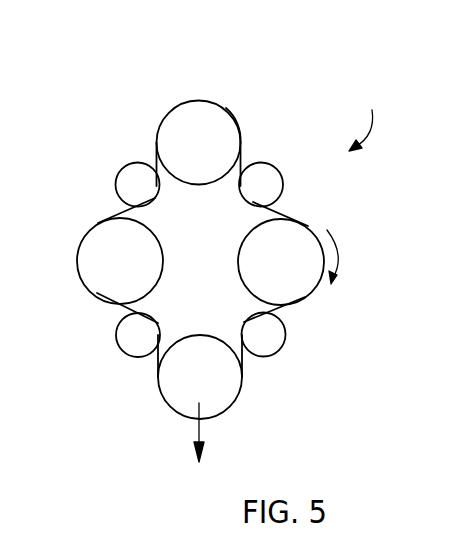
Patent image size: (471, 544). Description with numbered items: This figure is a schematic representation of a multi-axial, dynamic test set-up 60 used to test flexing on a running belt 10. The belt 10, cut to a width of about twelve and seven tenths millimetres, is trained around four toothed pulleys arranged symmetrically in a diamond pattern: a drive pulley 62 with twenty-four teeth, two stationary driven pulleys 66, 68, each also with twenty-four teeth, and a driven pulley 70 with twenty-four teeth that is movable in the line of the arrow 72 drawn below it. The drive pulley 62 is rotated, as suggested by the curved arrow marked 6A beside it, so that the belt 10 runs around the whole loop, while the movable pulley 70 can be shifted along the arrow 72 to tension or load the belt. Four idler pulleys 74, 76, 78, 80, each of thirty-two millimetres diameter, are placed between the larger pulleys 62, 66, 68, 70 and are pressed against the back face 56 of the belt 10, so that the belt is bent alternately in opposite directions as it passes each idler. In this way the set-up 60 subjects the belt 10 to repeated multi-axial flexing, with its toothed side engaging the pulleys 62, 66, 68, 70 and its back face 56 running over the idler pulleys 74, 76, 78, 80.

The belt 10 is at (278, 215).
The back face 56 is at (198, 100).
The multi-axial dynamic test set-up 60 is at (364, 119).
The drive pulley 62 is at (300, 243).
The stationary driven pulley 66 is at (220, 122).
The stationary driven pulley 68 is at (97, 286).
The rotation arrow 6A is at (336, 252).
The movable driven pulley 70 is at (232, 397).
The arrow 72 is at (193, 430).
The idler pulley 74 is at (265, 172).
The idler pulley 76 is at (280, 340).
The idler pulley 78 is at (133, 353).
The idler pulley 80 is at (141, 168).